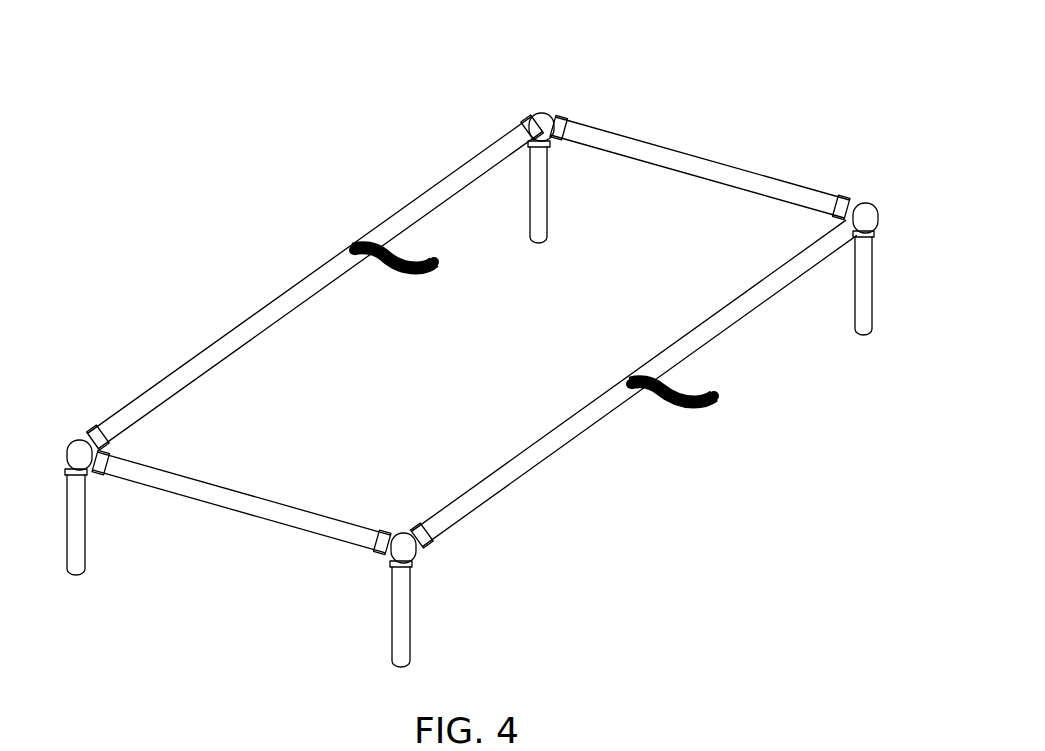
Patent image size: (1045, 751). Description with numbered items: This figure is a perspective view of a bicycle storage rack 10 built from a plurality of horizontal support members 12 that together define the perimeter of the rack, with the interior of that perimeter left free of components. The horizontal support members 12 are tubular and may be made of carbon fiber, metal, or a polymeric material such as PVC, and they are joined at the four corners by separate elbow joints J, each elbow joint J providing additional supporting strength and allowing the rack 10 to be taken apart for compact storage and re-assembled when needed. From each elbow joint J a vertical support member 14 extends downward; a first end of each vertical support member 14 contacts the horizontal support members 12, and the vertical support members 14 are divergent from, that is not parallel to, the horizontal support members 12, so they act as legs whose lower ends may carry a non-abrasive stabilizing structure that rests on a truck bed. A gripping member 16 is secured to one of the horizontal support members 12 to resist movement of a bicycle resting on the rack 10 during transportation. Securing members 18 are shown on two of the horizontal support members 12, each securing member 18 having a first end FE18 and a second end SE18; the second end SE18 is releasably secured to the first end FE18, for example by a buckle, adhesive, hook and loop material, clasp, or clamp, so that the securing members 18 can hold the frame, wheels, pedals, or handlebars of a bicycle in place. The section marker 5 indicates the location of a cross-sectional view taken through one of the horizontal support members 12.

The bicycle storage rack 10 is at (682, 58).
The horizontal support members 12 is at (694, 138).
The vertical support members 14 is at (862, 318).
The gripping member 16 is at (746, 174).
The securing member 18 is at (398, 256).
The elbow joint J is at (538, 114).
The section line for FIG. 5 is at (228, 463).
The first end of securing member FE18 is at (436, 262).
The second end of securing member SE18 is at (362, 252).